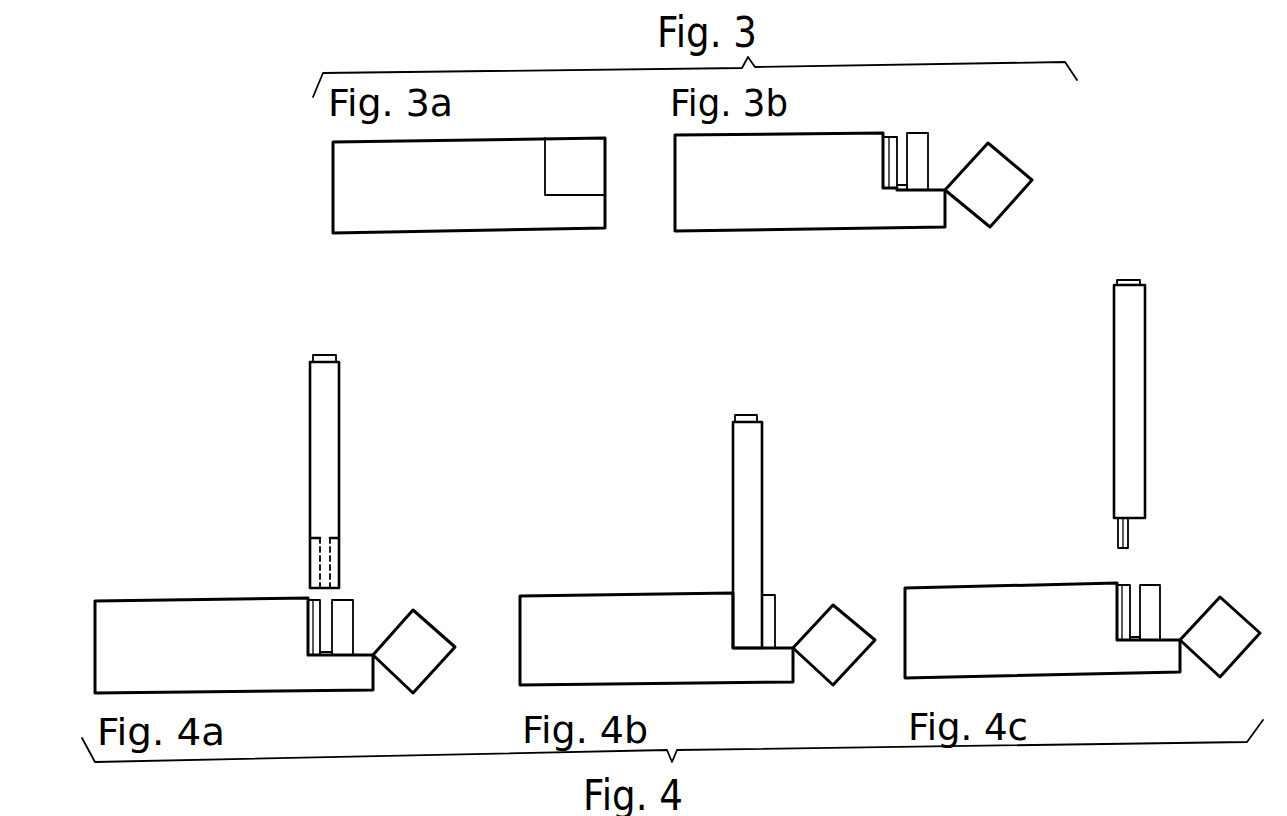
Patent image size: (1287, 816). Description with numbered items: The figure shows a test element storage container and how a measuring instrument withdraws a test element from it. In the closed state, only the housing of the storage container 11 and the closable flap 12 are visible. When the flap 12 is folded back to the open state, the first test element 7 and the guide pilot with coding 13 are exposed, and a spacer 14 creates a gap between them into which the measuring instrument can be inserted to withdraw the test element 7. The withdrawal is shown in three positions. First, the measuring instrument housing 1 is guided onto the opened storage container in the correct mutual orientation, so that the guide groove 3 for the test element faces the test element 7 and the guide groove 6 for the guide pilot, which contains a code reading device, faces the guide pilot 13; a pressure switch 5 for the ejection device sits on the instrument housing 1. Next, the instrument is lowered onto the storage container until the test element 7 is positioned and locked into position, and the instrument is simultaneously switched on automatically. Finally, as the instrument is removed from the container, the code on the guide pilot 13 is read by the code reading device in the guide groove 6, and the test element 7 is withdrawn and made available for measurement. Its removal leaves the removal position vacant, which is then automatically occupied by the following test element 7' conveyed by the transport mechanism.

In FIG. 4A, the measuring instrument housing 1 is at (315, 418).
In FIG. 4B, the measuring instrument housing 1 is at (738, 487).
In FIG. 4C, the measuring instrument housing 1 is at (1120, 390).
In FIG. 4A, the guide groove for test element 3 is at (310, 552).
In FIG. 4A, the pressure switch for the ejection device 5 is at (312, 352).
In FIG. 4B, the pressure switch for the ejection device 5 is at (736, 408).
In FIG. 4C, the pressure switch for the ejection device 5 is at (1128, 285).
In FIG. 4A, the guide groove for the guide pilot with a code reading device 6 is at (343, 548).
In FIG. 3B, the test element with edge profile 7 is at (868, 162).
In FIG. 4A, the test element with edge profile 7 is at (281, 585).
In FIG. 4C, the test element with edge profile 7 is at (1154, 522).
In FIG. 4C, the test element with edge profile 7' is at (1081, 569).
In FIG. 3A, the housing of the storage container 11 is at (342, 183).
In FIG. 3B, the housing of the storage container 11 is at (720, 222).
In FIG. 4A, the housing of the storage container 11 is at (112, 607).
In FIG. 4B, the housing of the storage container 11 is at (540, 600).
In FIG. 4C, the housing of the storage container 11 is at (928, 595).
In FIG. 3A, the flap 12 is at (552, 167).
In FIG. 3B, the flap 12 is at (1012, 178).
In FIG. 4A, the flap 12 is at (418, 623).
In FIG. 4B, the flap 12 is at (832, 618).
In FIG. 4C, the flap 12 is at (1223, 613).
In FIG. 3B, the guide pilot with coding 13 is at (920, 195).
In FIG. 4A, the guide pilot with coding 13 is at (352, 615).
In FIG. 4B, the guide pilot with coding 13 is at (773, 612).
In FIG. 4C, the guide pilot with coding 13 is at (1160, 607).
In FIG. 3B, the spacer 14 is at (902, 190).
In FIG. 4A, the spacer 14 is at (330, 665).
In FIG. 4C, the spacer 14 is at (1140, 650).